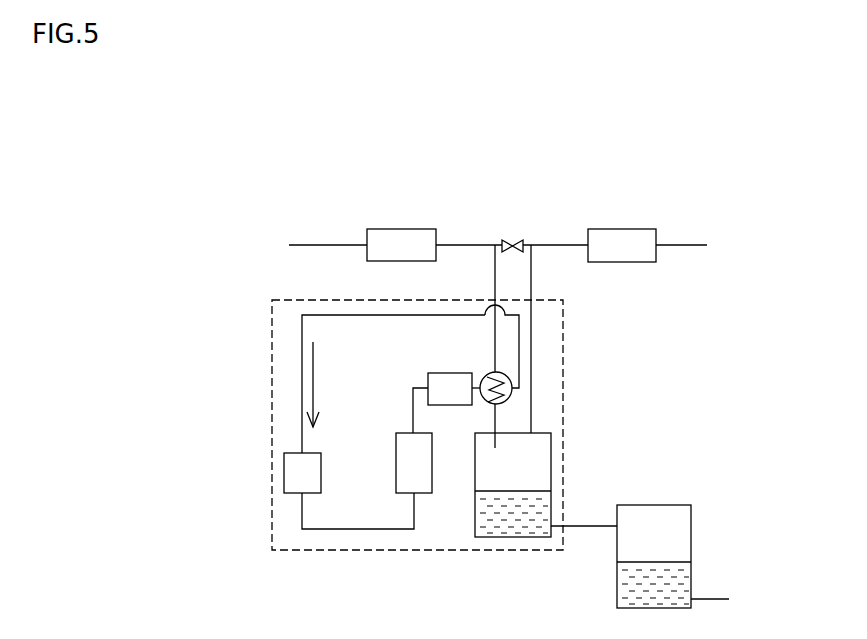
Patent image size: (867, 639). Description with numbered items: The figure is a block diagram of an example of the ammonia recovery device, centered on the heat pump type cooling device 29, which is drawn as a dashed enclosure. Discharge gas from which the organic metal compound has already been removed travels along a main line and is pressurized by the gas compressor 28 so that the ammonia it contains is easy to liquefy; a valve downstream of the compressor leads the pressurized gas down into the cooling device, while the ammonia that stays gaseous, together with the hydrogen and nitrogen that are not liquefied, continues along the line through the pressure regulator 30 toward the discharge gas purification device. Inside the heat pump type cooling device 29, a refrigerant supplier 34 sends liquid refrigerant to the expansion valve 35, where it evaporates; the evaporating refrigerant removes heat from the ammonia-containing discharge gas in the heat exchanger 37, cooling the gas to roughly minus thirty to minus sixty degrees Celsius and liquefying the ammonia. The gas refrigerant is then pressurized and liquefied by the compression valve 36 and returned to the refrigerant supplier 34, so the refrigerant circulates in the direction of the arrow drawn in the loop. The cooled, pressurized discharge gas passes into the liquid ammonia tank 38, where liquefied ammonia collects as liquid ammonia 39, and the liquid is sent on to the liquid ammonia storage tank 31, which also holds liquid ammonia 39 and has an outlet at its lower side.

The gas compressor 28 is at (403, 229).
The heat pump type cooling device 29 is at (272, 319).
The pressure regulator 30 is at (620, 229).
The liquid ammonia storage tank 31 is at (665, 505).
The refrigerant supplier 34 is at (433, 472).
The expansion valve 35 is at (428, 385).
The compression valve 36 is at (284, 466).
The heat exchanger 37 is at (508, 376).
The liquid ammonia tank 38 is at (552, 446).
The liquid ammonia 39 is at (543, 520).